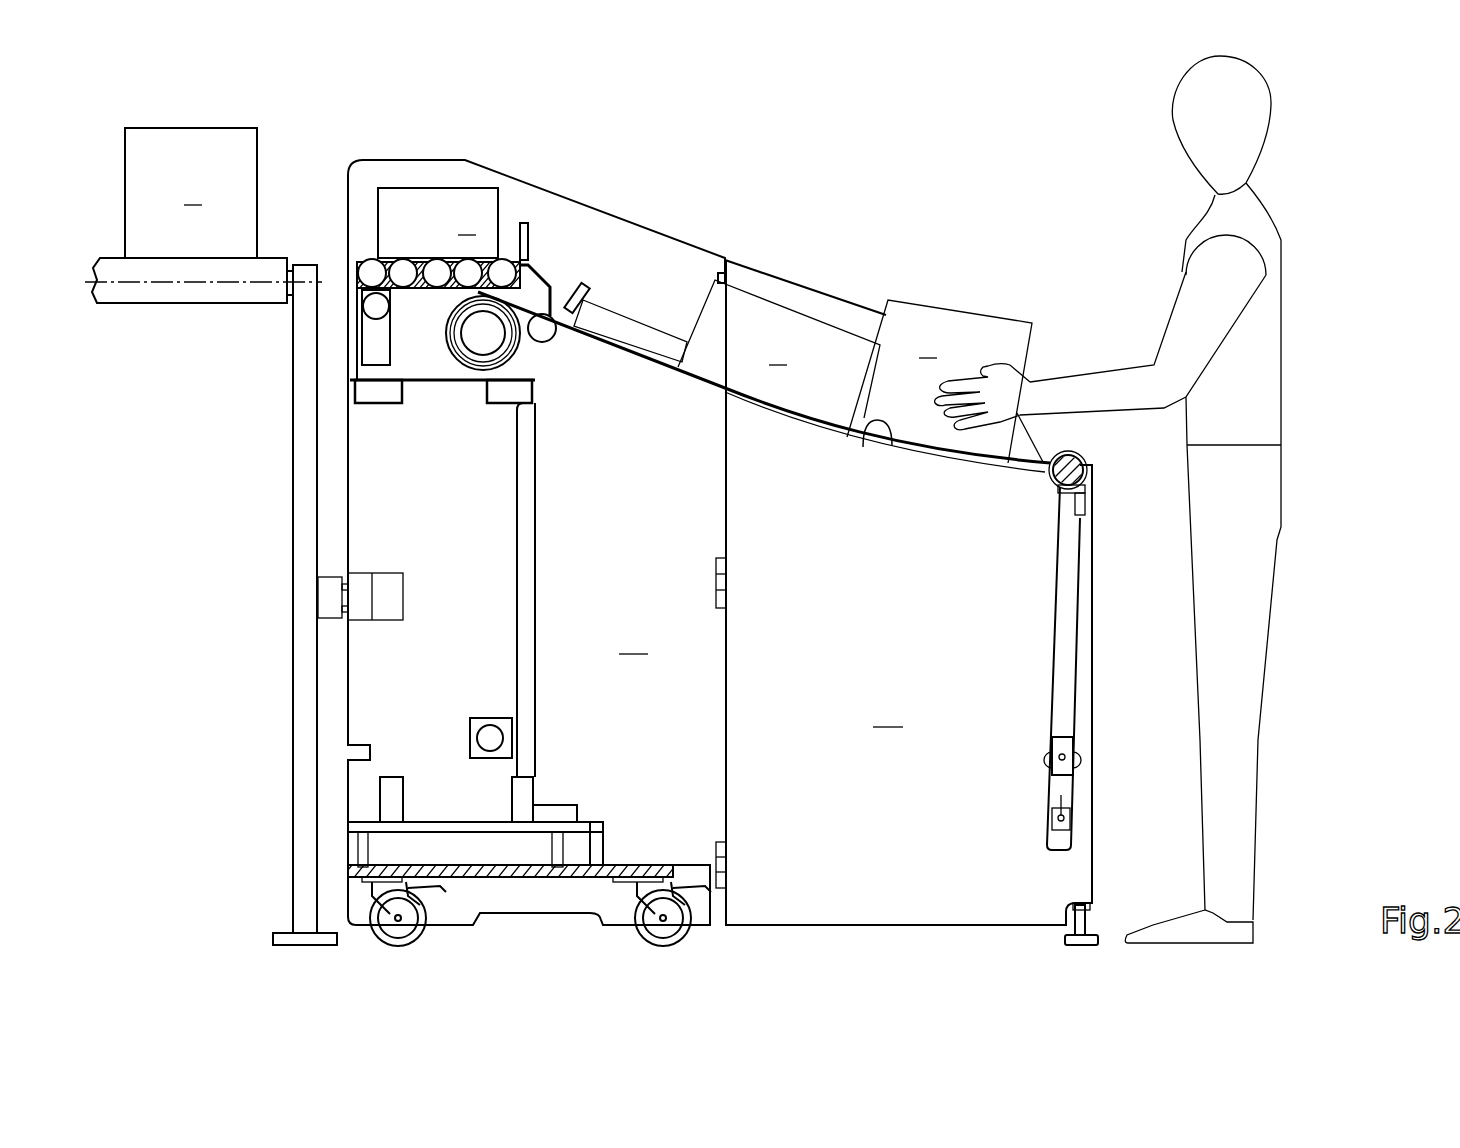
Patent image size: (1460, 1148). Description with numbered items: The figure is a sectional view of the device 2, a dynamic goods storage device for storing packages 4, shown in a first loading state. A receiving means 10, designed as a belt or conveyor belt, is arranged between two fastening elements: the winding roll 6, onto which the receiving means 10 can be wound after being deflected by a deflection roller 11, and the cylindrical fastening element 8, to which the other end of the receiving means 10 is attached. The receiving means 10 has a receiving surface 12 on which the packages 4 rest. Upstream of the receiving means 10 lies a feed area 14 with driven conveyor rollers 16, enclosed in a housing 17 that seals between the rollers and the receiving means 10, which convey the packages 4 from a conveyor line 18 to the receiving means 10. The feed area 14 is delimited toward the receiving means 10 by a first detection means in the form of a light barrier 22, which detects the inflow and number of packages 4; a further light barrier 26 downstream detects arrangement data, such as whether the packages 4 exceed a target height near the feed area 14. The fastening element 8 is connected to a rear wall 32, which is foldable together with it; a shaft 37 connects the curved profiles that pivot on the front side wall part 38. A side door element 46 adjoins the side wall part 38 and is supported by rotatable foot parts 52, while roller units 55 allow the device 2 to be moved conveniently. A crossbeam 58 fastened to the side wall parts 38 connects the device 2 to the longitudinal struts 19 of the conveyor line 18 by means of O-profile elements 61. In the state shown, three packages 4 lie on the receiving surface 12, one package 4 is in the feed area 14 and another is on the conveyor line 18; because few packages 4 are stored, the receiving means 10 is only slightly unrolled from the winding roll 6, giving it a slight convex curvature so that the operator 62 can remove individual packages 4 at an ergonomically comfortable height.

The device 2 is at (835, 190).
The packages 4 is at (623, 332).
The winding roll 6 is at (517, 352).
The fastening element 8 is at (1082, 474).
The receiving means 10 is at (940, 487).
The deflection roller 11 is at (558, 335).
The receiving surface 12 is at (892, 445).
The feed area 14 is at (365, 243).
The conveyor rollers 16 is at (437, 258).
The housing 17 is at (541, 280).
The conveyor line 18 is at (136, 342).
The longitudinal struts 19 is at (307, 537).
The light barrier 22 is at (530, 235).
The light barrier 26 is at (575, 283).
The rear wall 32 is at (1068, 633).
The shaft 37 is at (470, 728).
The side wall part 38 is at (529, 550).
The side door element 46 is at (904, 592).
The foot parts 52 is at (1087, 940).
The roller units 55 is at (398, 893).
The crossbeam 58 is at (372, 597).
The O-profile elements 61 is at (328, 600).
The operator 62 is at (1255, 383).